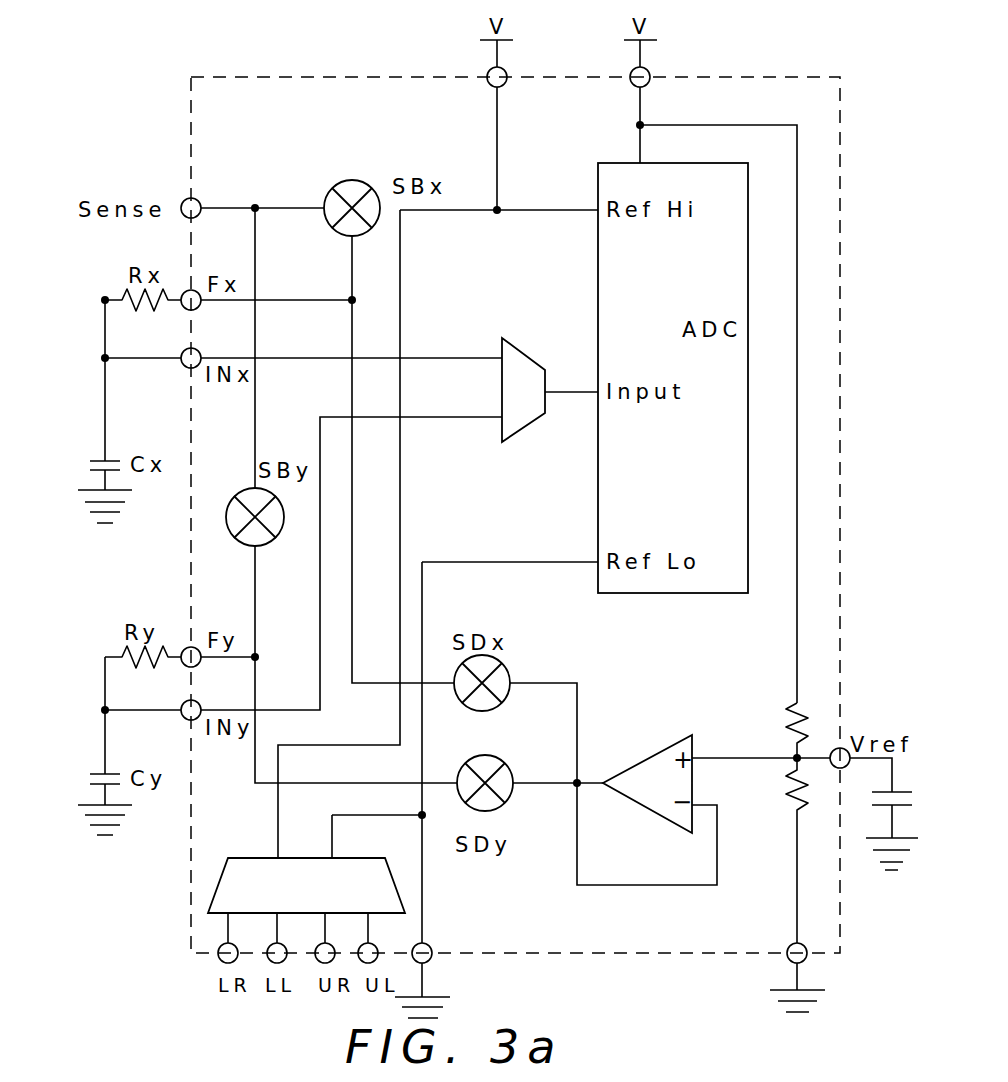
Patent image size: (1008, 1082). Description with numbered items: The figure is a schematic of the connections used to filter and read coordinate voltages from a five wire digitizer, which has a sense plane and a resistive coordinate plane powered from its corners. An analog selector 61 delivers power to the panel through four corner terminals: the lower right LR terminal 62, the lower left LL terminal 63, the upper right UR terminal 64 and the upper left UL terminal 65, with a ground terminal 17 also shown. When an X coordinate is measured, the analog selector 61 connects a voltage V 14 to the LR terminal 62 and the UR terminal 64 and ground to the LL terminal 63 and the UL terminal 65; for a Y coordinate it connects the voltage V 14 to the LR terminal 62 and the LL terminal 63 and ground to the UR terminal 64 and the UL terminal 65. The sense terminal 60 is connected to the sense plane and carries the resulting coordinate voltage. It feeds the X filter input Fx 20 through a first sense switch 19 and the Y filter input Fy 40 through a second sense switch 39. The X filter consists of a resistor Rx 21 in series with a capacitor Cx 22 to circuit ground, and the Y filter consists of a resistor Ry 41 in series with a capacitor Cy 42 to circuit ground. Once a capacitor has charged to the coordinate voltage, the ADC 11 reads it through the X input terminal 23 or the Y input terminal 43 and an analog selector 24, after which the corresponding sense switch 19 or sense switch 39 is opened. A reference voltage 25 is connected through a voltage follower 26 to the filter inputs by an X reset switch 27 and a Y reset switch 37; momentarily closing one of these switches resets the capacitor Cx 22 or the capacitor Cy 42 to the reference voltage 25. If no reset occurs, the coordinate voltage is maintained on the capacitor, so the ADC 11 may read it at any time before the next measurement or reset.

The ADC 11 is at (748, 278).
The voltage V 14 is at (487, 23).
The ground terminal 17 is at (428, 960).
The switch SBx 19 is at (337, 183).
The filter input Fx 20 is at (195, 310).
The resistor Rx 21 is at (125, 294).
The capacitor Cx 22 is at (95, 463).
The terminal INx 23 is at (186, 364).
The analog selector 24 is at (508, 430).
The reference voltage Vref 25 is at (870, 735).
The voltage follower 26 is at (683, 823).
The switch SDx 27 is at (497, 680).
The switch SDy 37 is at (500, 790).
The switch SBy 39 is at (272, 530).
The filter input Fy 40 is at (188, 646).
The resistor Ry 41 is at (125, 652).
The capacitor Cy 42 is at (95, 774).
The terminal INy 43 is at (183, 722).
The sense terminal 60 is at (189, 198).
The analog selector 61 is at (250, 874).
The LR terminal 62 is at (222, 960).
The LL terminal 63 is at (272, 960).
The UR terminal 64 is at (322, 961).
The UL terminal 65 is at (365, 962).